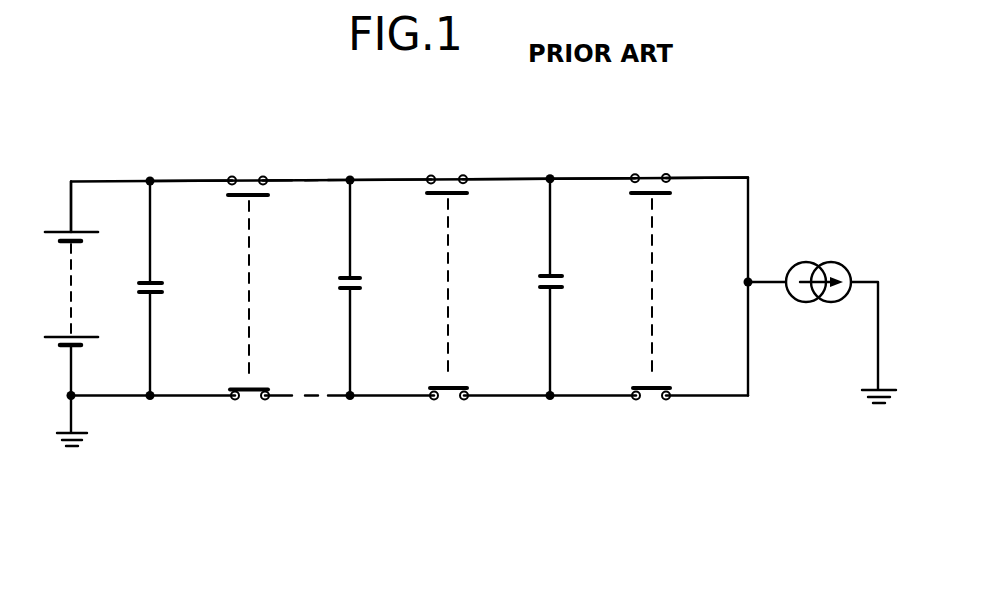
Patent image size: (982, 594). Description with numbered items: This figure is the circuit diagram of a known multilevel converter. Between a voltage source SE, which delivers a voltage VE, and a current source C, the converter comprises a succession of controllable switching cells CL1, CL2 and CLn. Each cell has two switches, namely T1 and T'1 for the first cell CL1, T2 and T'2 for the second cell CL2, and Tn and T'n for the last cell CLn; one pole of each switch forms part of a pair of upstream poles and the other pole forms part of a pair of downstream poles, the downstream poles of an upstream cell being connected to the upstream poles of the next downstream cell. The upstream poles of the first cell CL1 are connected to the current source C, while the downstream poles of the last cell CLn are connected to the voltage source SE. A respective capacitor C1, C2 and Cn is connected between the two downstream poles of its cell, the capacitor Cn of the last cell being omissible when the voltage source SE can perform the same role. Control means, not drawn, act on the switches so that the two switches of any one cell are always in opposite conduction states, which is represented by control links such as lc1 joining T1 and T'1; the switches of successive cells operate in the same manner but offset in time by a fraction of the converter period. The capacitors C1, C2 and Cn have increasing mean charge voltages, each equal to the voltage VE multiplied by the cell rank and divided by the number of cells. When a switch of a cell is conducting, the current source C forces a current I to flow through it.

The voltage VE is at (72, 210).
The voltage source SE is at (71, 270).
The last switching cell CLn is at (250, 149).
The second switching cell CL2 is at (450, 148).
The first switching cell CL1 is at (649, 148).
The capacitor of the last cell Cn is at (163, 287).
The capacitor of the second cell C2 is at (362, 283).
The capacitor of the first cell C1 is at (562, 281).
The switch of the last cell Tn is at (262, 198).
The switch of the second cell T2 is at (459, 197).
The switch of the first cell T1 is at (660, 197).
The complementary switch of the last cell T'n is at (271, 370).
The complementary switch of the second cell T'2 is at (473, 370).
The complementary switch of the first cell T'1 is at (671, 370).
The control link lc1 is at (652, 292).
The current I is at (821, 253).
The current source C is at (812, 302).